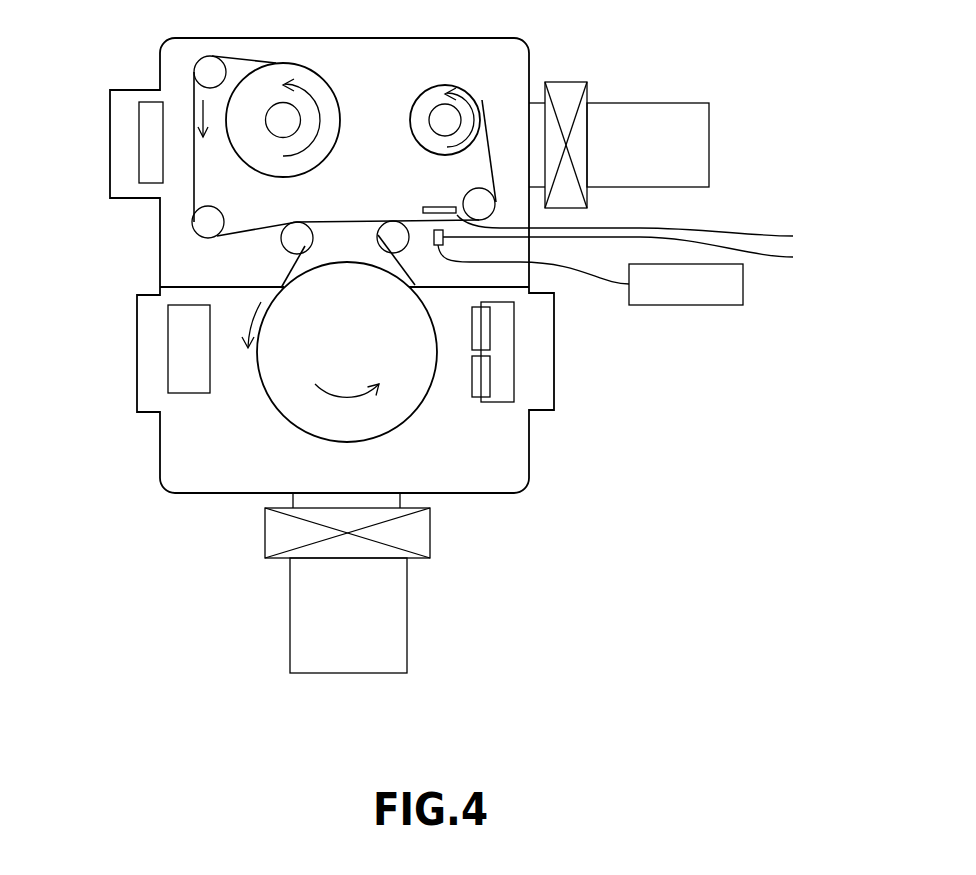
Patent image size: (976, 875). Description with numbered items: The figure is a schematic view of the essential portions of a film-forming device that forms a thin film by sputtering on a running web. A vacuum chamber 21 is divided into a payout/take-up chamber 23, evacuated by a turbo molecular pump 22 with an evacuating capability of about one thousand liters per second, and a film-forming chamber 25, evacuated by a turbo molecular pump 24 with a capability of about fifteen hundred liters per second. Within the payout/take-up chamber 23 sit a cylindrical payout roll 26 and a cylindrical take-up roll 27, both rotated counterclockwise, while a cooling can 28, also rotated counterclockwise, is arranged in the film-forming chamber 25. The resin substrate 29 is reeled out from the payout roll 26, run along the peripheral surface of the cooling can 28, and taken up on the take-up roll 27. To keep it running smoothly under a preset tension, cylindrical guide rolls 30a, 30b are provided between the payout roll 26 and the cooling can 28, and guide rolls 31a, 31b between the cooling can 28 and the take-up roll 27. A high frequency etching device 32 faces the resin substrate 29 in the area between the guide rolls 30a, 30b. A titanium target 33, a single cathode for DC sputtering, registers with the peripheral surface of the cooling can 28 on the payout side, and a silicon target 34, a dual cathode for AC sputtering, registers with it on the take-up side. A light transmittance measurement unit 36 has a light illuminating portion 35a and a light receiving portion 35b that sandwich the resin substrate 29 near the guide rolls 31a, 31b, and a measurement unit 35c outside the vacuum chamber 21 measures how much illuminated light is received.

The vacuum chamber 21 is at (45, 273).
The turbo molecular pump 22 is at (691, 141).
The payout/take-up chamber 23 is at (160, 253).
The turbo molecular pump 24 is at (383, 627).
The film-forming chamber 25 is at (160, 430).
The payout roll 26 is at (276, 117).
The take-up roll 27 is at (443, 117).
The cooling can 28 is at (383, 412).
The resin substrate 29 is at (195, 177).
The guide roll 30a is at (208, 70).
The guide roll 30b is at (218, 218).
The guide roll 31a is at (393, 230).
The guide roll 31b is at (477, 200).
The high frequency etching device 32 is at (148, 152).
The titanium target 33 is at (197, 383).
The silicon target 34 is at (505, 357).
The light illuminating portion 35a is at (629, 228).
The sensor head 35b is at (635, 251).
The measurement unit 35c is at (743, 283).
The light transmittance measurement unit 36 is at (843, 217).